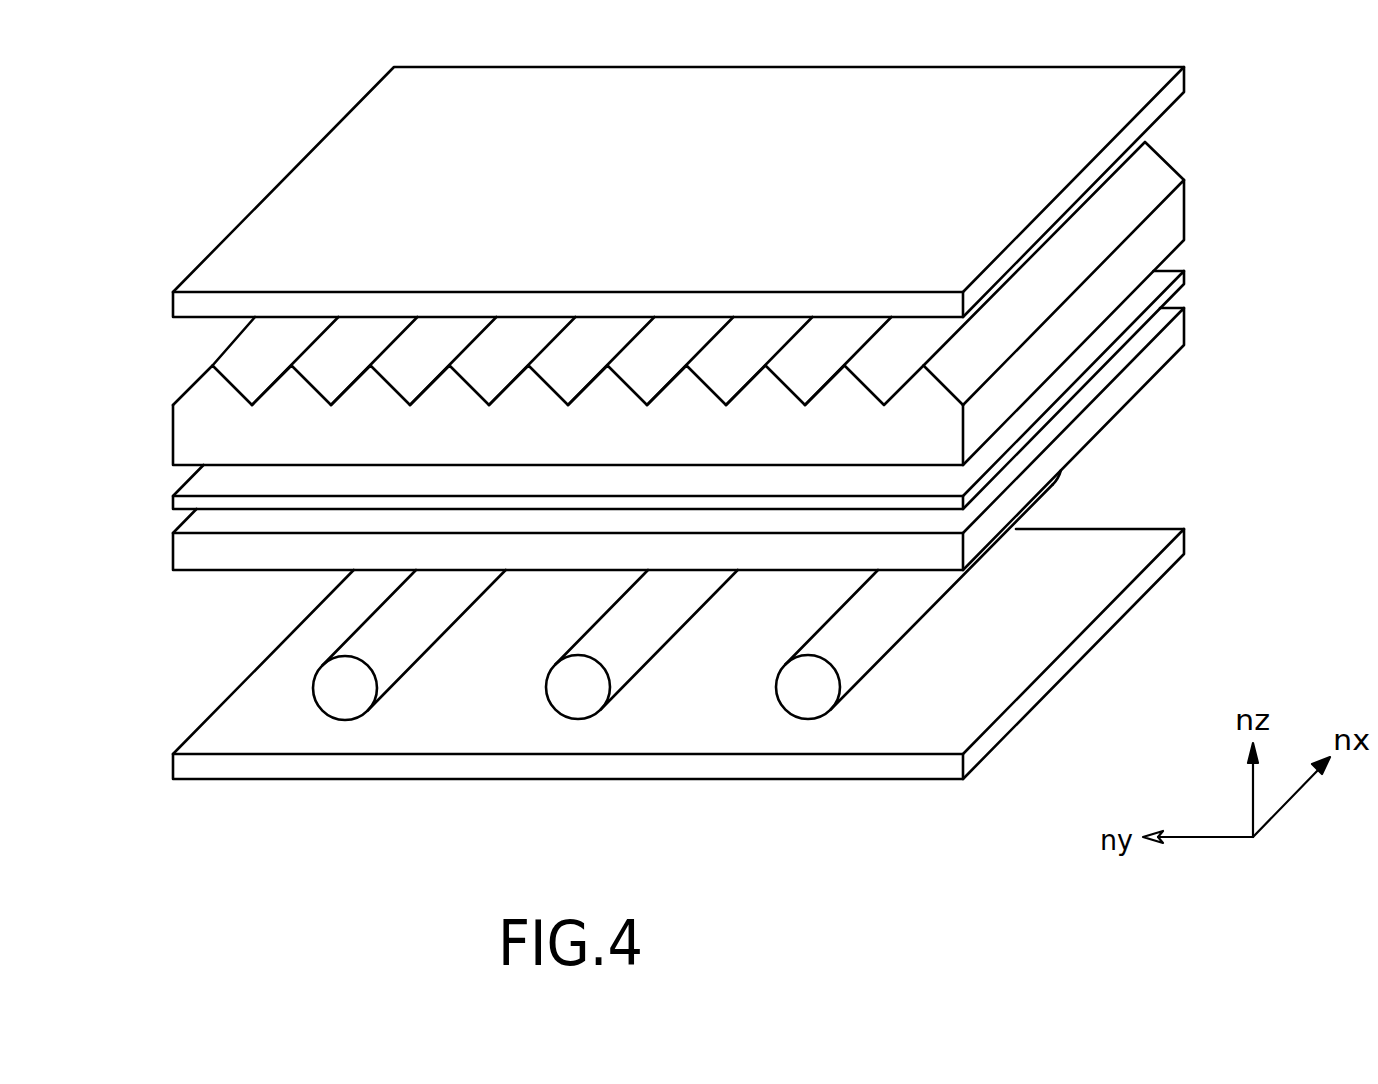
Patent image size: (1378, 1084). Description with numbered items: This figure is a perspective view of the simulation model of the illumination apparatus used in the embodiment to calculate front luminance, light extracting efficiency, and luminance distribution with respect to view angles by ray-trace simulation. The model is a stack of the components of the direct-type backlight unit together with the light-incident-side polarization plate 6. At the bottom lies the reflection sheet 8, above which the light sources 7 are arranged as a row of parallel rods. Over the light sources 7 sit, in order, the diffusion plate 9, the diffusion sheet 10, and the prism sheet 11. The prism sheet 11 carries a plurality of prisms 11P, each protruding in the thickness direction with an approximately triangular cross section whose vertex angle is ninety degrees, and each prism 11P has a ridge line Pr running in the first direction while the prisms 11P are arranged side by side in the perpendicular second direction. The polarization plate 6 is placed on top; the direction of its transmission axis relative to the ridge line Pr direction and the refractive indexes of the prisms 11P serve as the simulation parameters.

The light-incident-side polarization plate 6 is at (251, 213).
The ridge line Pr is at (228, 350).
The prism 11P is at (192, 386).
The prism sheet 11 is at (173, 430).
The diffusion sheet 10 is at (173, 502).
The diffusion plate 9 is at (173, 550).
The light sources 7 is at (349, 640).
The reflection sheet 8 is at (200, 740).